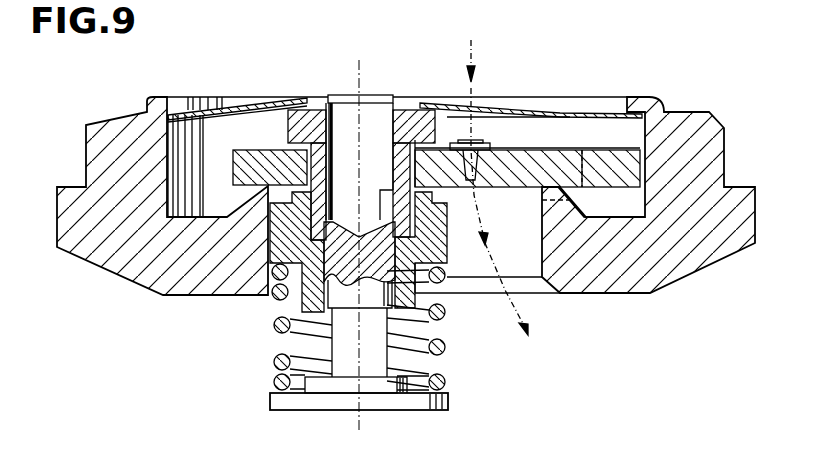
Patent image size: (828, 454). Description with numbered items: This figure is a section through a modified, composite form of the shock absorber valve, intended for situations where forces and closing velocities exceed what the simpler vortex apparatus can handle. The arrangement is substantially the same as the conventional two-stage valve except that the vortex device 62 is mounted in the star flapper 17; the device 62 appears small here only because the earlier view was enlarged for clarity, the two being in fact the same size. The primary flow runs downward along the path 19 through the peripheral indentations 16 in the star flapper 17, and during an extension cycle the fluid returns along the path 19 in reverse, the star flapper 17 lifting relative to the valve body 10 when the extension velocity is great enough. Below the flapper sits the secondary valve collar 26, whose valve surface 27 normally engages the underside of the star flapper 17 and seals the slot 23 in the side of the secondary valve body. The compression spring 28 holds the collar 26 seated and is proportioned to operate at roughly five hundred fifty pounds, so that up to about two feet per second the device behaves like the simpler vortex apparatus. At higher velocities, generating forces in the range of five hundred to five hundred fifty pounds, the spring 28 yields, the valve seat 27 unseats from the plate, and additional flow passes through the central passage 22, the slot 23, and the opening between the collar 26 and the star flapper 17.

The valve body 10 is at (610, 272).
The peripheral indentations 16 is at (611, 158).
The star flapper 17 is at (545, 156).
The primary flow path 19 is at (473, 58).
The central passage 22 is at (348, 113).
The slot 23 is at (398, 203).
The secondary valve collar 26 is at (449, 254).
The valve surface 27 is at (299, 188).
The compression spring 28 is at (273, 327).
The vortex device 62 is at (484, 138).